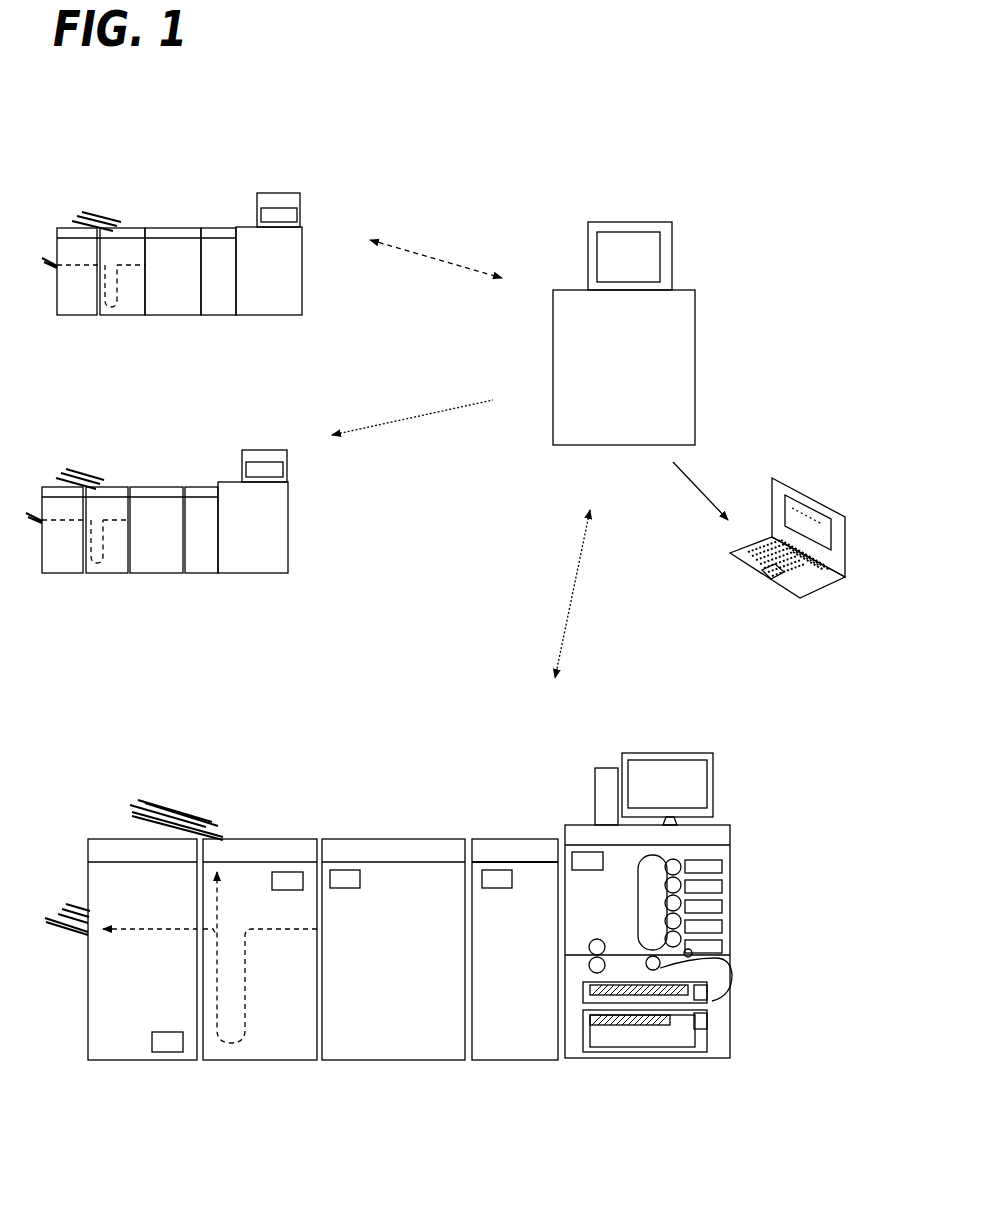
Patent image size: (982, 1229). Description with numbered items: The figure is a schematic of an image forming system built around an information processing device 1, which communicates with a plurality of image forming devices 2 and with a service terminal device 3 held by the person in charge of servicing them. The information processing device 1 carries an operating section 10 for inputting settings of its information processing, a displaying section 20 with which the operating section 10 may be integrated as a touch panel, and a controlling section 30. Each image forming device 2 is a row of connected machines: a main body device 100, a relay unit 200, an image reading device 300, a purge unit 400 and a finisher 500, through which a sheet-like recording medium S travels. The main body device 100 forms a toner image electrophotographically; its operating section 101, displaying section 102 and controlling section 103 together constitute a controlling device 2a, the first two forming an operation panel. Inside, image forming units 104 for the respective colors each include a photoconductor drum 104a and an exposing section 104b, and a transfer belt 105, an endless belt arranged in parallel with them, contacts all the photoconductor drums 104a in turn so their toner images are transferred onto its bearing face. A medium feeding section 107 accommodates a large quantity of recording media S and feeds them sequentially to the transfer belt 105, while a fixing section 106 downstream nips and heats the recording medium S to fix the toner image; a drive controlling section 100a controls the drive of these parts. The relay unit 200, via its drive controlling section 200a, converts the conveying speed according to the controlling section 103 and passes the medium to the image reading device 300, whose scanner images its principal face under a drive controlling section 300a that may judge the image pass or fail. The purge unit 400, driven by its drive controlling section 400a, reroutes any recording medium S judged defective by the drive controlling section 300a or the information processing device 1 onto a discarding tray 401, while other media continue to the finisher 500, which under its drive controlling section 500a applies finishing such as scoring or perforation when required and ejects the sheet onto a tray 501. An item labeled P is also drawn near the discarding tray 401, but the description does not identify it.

The information processing device 1 is at (682, 182).
The image forming device 2 is at (140, 198).
The controlling device 2a is at (729, 758).
The service terminal device 3 is at (819, 477).
The operating section 10 is at (608, 222).
The displaying section 20 is at (660, 256).
The controlling section 30 is at (697, 360).
The main body device 100 is at (632, 1060).
The drive controlling section 100a is at (582, 848).
The operating section 101 is at (713, 790).
The displaying section 102 is at (658, 760).
The controlling section 103 is at (605, 767).
The image forming units 104 is at (734, 872).
The photoconductor drum 104a is at (681, 862).
The exposing section 104b is at (750, 937).
The transfer belt 105 is at (636, 904).
The fixing section 106 is at (597, 938).
The medium feeding section 107 is at (716, 1026).
The relay unit 200 is at (487, 1062).
The drive controlling section 200a is at (496, 869).
The image reading device 300 is at (345, 1062).
The drive controlling section 300a is at (348, 869).
The purge unit 400 is at (222, 1062).
The drive controlling section 400a is at (287, 870).
The discarding tray 401 is at (136, 812).
The finisher 500 is at (105, 1062).
The drive controlling section 500a is at (165, 1054).
The tray 501 is at (70, 940).
The insert paper P is at (190, 816).
The recording medium S is at (80, 902).